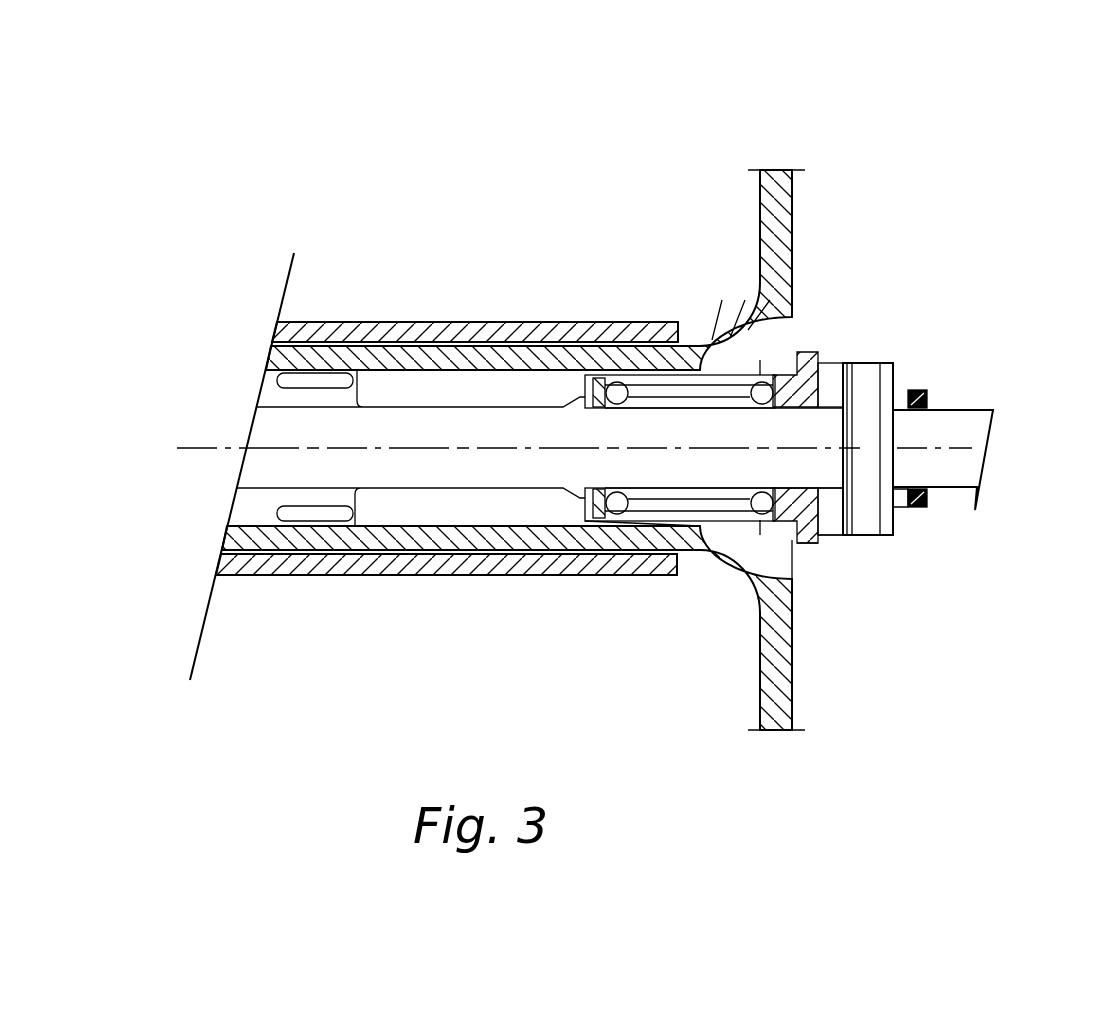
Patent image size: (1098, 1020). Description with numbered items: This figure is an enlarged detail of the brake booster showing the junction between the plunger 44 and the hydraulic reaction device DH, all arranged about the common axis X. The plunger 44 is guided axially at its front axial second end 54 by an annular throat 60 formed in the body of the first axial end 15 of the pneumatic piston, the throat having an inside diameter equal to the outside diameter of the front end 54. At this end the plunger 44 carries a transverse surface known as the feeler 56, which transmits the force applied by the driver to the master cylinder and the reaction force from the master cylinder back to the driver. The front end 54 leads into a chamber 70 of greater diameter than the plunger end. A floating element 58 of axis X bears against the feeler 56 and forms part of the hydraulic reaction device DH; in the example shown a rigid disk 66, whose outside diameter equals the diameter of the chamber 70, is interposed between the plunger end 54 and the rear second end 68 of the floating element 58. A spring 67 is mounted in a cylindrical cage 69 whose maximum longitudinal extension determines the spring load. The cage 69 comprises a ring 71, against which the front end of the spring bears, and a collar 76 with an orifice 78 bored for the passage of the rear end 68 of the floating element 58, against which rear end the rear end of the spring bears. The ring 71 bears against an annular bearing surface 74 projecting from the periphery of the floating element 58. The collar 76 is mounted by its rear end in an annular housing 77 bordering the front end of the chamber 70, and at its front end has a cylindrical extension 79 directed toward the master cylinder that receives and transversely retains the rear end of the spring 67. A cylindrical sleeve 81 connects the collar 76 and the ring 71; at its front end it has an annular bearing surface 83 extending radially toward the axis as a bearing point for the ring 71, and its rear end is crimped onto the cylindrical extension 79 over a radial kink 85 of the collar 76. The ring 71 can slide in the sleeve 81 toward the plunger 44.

The first axial end of the pneumatic piston 15 is at (808, 206).
The plunger 44 is at (976, 379).
The front axial second end of the plunger 54 is at (895, 493).
The feeler 56 is at (889, 362).
The floating element 58 is at (413, 526).
The annular throat 60 is at (922, 388).
The rigid disk 66 is at (865, 537).
The spring 67 is at (652, 578).
The rear second end of the floating element 68 is at (813, 543).
The cylindrical cage 69 is at (693, 336).
The chamber 70 is at (840, 537).
The ring 71 is at (616, 527).
The annular bearing surface 74 is at (574, 527).
The collar 76 is at (808, 352).
The annular housing 77 is at (798, 545).
The orifice 78 is at (830, 362).
The cylindrical extension 79 is at (758, 546).
The cylindrical sleeve 81 is at (620, 378).
The annular bearing surface of the sleeve 83 is at (600, 372).
The radial kink 85 is at (797, 351).
The hydraulic reaction device DH is at (456, 366).
The axis X is at (197, 447).